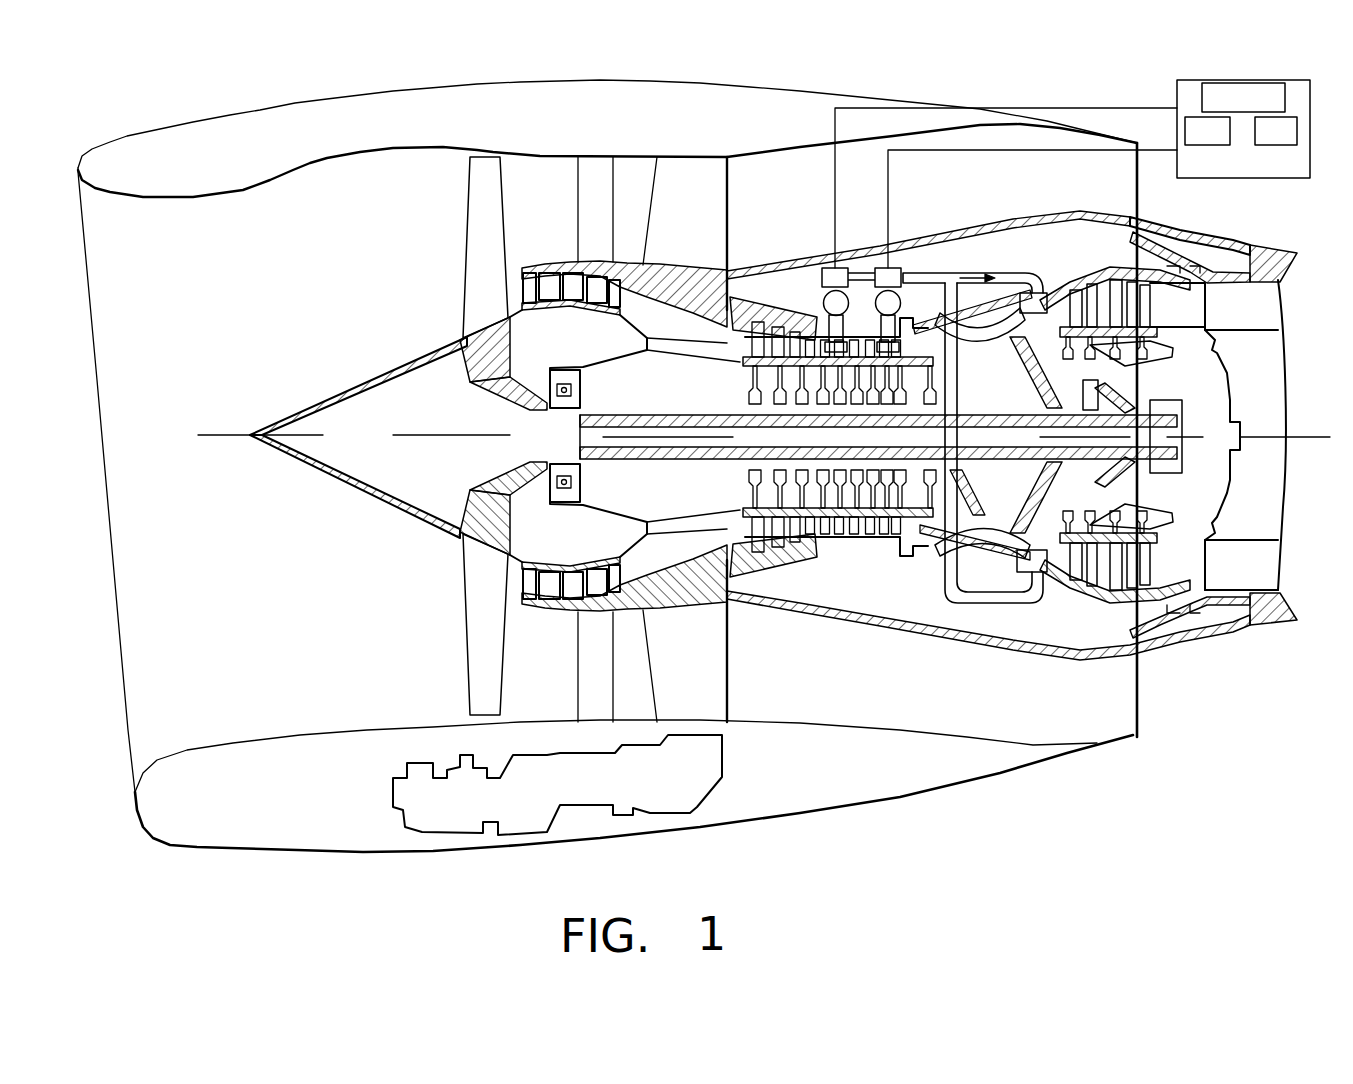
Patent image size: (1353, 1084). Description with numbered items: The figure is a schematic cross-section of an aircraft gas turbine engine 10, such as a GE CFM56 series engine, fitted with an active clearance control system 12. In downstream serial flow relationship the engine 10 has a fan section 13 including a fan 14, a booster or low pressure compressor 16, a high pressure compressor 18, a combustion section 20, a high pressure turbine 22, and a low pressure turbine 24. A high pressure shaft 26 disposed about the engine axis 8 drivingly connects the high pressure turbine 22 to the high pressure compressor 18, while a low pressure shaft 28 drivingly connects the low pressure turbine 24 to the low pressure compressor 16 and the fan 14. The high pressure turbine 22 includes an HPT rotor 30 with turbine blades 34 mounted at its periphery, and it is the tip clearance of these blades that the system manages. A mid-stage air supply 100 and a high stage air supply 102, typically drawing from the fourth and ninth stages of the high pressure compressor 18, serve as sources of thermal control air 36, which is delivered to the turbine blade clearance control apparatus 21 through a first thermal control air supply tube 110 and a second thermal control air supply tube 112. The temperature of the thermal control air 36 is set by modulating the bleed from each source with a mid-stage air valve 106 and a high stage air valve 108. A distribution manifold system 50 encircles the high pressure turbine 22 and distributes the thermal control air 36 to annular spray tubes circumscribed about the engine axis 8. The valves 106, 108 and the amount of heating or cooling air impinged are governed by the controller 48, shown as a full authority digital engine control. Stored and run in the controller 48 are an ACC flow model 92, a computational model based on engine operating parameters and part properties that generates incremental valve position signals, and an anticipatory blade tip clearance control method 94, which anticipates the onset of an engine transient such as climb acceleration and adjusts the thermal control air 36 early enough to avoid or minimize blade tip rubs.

The engine axis 8 is at (478, 435).
The aircraft gas turbine engine 10 is at (405, 623).
The active clearance control system 12 is at (1062, 100).
The fan section 13 is at (517, 131).
The fan 14 is at (478, 222).
The booster or low pressure compressor 16 is at (545, 252).
The high pressure compressor 18 is at (813, 320).
The combustion section 20 is at (982, 555).
The turbine blade clearance control apparatus 21 is at (1062, 286).
The high pressure turbine 22 is at (1046, 580).
The low pressure turbine 24 is at (1127, 262).
The high pressure shaft 26 is at (958, 492).
The low pressure shaft 28 is at (635, 460).
The HPT rotor 30 is at (1070, 385).
The turbine blades 34 is at (1033, 323).
The thermal control air 36 is at (918, 315).
The controller 48 is at (1243, 129).
The distribution manifold system 50 is at (1013, 592).
The ACC flow model 92 is at (1207, 132).
The anticipatory blade tip clearance control method 94 is at (1276, 132).
The mid-stage air supply 100 is at (770, 262).
The high stage air supply 102 is at (906, 315).
The mid-stage air valve 106 is at (822, 290).
The high stage air valve 108 is at (873, 290).
The first thermal control air supply tube 110 is at (1007, 270).
The second thermal control air supply tube 112 is at (973, 640).